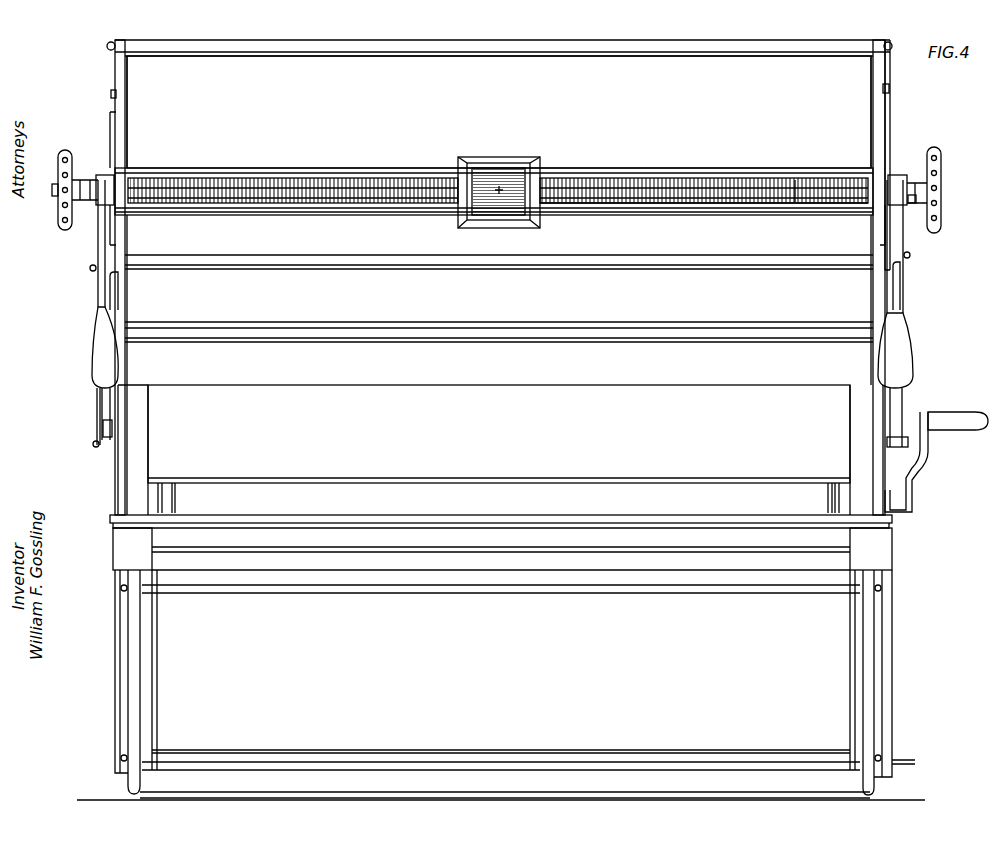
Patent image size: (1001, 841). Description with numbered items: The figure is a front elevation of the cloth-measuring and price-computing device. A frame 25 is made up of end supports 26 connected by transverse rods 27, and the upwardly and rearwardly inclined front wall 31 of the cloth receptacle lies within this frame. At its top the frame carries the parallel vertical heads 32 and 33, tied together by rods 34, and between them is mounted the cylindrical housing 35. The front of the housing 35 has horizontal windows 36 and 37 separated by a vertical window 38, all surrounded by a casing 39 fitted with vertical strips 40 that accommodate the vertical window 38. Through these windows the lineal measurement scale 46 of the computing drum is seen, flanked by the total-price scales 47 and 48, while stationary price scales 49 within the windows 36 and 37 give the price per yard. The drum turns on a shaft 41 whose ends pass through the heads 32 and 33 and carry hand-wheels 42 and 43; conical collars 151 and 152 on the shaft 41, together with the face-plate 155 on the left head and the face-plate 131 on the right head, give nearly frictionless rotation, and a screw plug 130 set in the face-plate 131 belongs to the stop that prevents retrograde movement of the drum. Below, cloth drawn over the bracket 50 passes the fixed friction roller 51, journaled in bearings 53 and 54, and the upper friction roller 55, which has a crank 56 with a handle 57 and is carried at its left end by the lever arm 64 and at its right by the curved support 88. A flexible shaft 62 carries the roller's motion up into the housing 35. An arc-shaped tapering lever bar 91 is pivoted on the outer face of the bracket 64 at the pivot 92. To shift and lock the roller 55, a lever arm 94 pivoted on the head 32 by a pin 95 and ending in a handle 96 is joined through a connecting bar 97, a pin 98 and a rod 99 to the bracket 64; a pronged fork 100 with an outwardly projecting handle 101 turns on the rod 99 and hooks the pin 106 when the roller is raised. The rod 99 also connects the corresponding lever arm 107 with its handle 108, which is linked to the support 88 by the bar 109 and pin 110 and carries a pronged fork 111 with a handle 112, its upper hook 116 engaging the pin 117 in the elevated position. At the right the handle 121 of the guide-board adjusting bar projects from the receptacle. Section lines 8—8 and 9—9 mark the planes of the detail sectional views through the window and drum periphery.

The section line 8— 8 is at (322, 238).
The section line 9— 9 is at (500, 240).
The frame 25 is at (538, 770).
The end supports 26 is at (128, 694).
The transverse rods 27 is at (552, 586).
The front wall 31 is at (503, 670).
The head 32 is at (116, 70).
The head 33 is at (885, 48).
The rods 34 is at (450, 52).
The cylindrical housing 35 is at (405, 73).
The horizontal window 36 is at (388, 178).
The horizontal window 37 is at (658, 188).
The vertical window 38 is at (512, 165).
The casing 39 is at (404, 215).
The vertical strips 40 is at (538, 165).
The shaft 41 is at (56, 188).
The hand-wheel 42 is at (62, 155).
The hand-wheel 43 is at (940, 152).
The lineal measurement scale 46 is at (486, 215).
The total-price scale 47 is at (210, 188).
The total-price scale 48 is at (775, 188).
The stationary price scales 49 is at (718, 203).
The bracket 50 is at (372, 548).
The friction roller 51 is at (484, 548).
The bearing 53 is at (110, 538).
The bearing 54 is at (880, 538).
The upper friction roller 55 is at (402, 495).
The crank 56 is at (912, 482).
The handle 57 is at (965, 418).
The flexible shaft 62 is at (132, 383).
The lever arm 64 is at (133, 450).
The curved support 88 is at (866, 450).
The arc-shaped tapering lever bar 91 is at (110, 408).
The pivot 92 is at (112, 428).
The lever arm 94 is at (92, 268).
The pin 95 is at (92, 222).
The handle 96 is at (102, 372).
The connecting bar 97 is at (98, 430).
The pin 98 is at (94, 450).
The rod 99 is at (570, 265).
The pronged fork 100 is at (126, 228).
The handle 101 is at (112, 292).
The pin 106 is at (113, 95).
The lever arm 107 is at (900, 236).
The handle 108 is at (898, 358).
The bar 109 is at (905, 392).
The pin 110 is at (886, 442).
The pronged fork 111 is at (885, 252).
The handle 112 is at (892, 287).
The upper hook 116 is at (885, 228).
The pin 117 is at (888, 90).
The handle 121 is at (905, 764).
The screw plug 130 is at (930, 200).
The face-plate 131 is at (892, 128).
The conical collar 151 is at (92, 178).
The conical collar 152 is at (908, 172).
The face-plate 155 is at (113, 128).